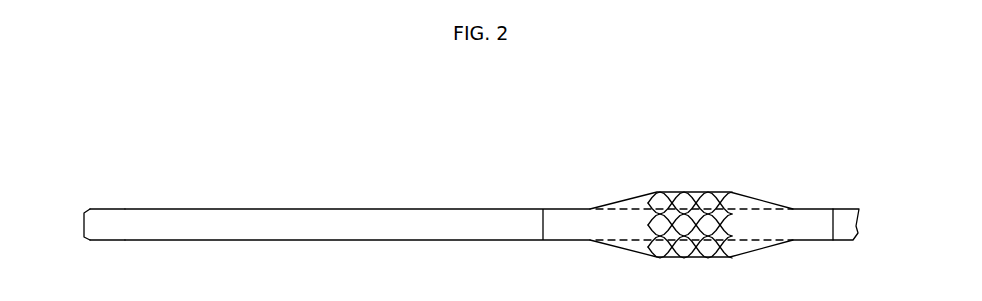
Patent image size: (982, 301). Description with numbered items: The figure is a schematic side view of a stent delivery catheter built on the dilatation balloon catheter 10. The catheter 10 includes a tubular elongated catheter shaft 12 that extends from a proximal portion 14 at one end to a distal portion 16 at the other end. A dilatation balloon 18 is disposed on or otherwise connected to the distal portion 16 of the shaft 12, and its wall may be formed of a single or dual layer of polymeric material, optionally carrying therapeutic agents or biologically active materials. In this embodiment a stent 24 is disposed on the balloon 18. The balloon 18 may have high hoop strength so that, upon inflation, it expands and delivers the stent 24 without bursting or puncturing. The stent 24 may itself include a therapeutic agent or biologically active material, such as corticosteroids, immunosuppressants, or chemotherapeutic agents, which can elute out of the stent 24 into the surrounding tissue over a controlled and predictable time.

The dilatation balloon catheter 10 is at (220, 112).
The catheter shaft 12 is at (402, 209).
The proximal portion 14 is at (125, 198).
The distal portion 16 is at (838, 205).
The dilatation balloon 18 is at (612, 196).
The stent 24 is at (665, 196).